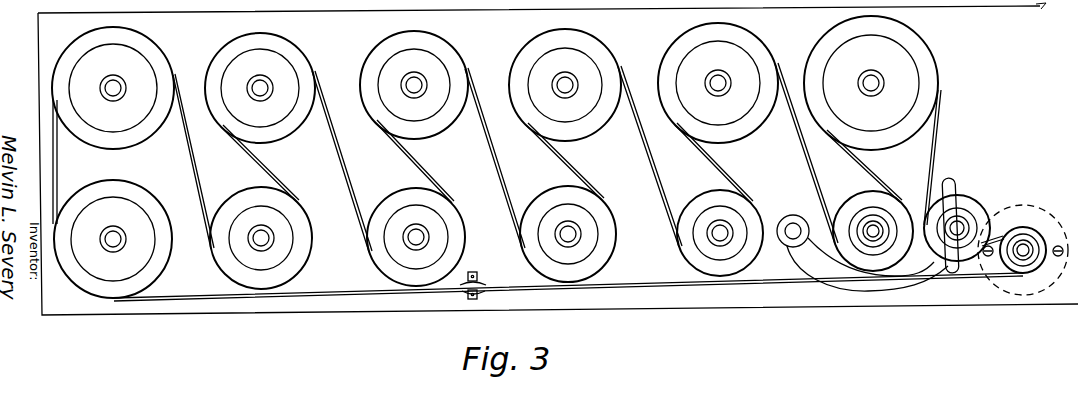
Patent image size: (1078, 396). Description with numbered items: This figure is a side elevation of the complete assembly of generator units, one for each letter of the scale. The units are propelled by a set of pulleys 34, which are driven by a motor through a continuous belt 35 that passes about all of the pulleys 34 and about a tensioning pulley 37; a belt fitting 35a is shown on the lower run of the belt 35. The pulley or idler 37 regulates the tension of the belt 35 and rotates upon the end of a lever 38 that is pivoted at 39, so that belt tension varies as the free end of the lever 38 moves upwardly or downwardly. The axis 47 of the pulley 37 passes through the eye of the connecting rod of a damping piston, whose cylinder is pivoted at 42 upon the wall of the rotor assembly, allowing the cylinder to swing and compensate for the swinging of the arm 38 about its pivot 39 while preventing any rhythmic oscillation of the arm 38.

The pulleys 34 is at (495, 157).
The continuous belt 35 is at (251, 159).
The belt clamp 35a is at (480, 290).
The tensioning pulley 37 is at (955, 198).
The lever 38 is at (862, 285).
The pivot 39 is at (793, 216).
The pivot 42 is at (955, 303).
The axis 47 is at (962, 222).